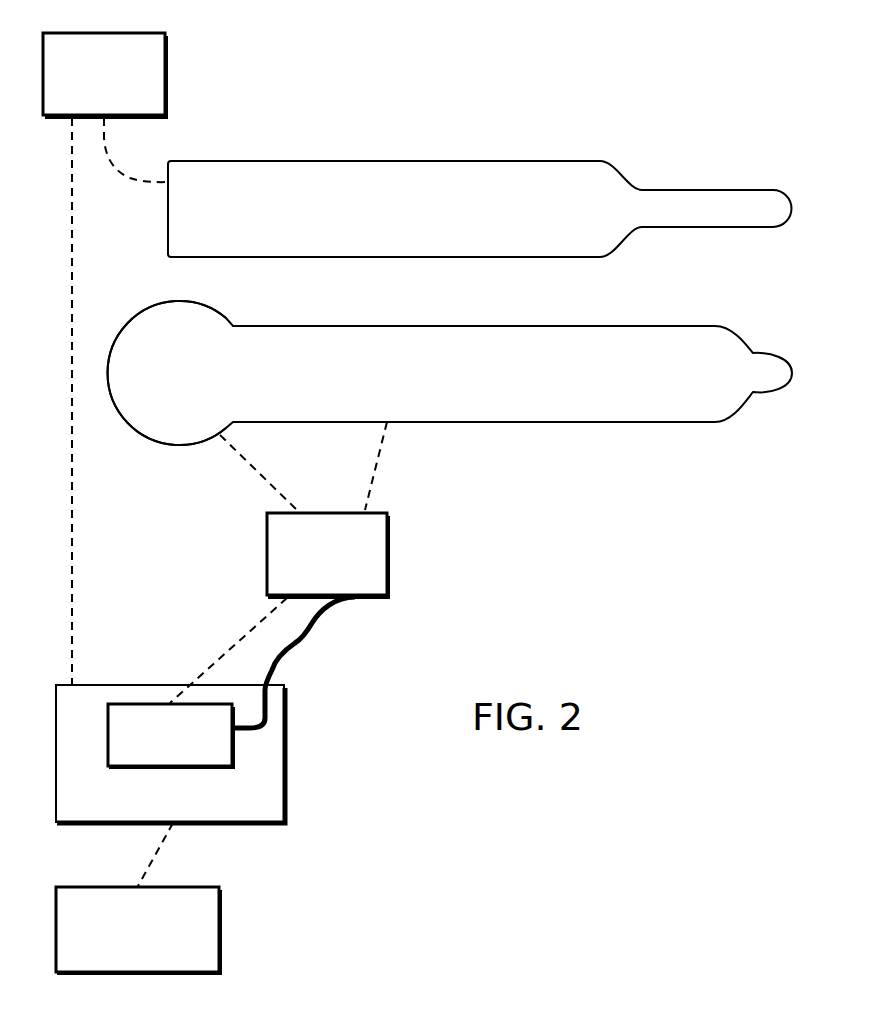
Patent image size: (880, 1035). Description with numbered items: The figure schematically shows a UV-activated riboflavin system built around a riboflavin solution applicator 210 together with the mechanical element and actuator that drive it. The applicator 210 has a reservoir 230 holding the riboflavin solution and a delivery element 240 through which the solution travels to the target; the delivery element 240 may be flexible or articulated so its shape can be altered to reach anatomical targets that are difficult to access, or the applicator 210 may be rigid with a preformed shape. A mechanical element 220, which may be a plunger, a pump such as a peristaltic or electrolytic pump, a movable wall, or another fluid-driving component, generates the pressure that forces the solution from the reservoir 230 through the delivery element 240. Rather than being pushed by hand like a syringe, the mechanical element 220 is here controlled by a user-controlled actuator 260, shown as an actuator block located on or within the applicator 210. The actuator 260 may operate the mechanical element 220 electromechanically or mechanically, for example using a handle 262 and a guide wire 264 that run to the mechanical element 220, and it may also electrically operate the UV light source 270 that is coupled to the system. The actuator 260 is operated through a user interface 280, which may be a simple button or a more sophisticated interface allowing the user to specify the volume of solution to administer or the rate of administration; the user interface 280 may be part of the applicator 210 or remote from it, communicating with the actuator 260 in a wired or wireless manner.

The riboflavin solution applicator 210 is at (450, 392).
The mechanical element 220 is at (392, 547).
The reservoir 230 is at (180, 417).
The delivery element 240 is at (540, 387).
The actuator 260 is at (207, 754).
The handle 262 is at (148, 742).
The guide wire 264 is at (308, 632).
The UV light source 270 is at (168, 65).
The user interface 280 is at (221, 928).